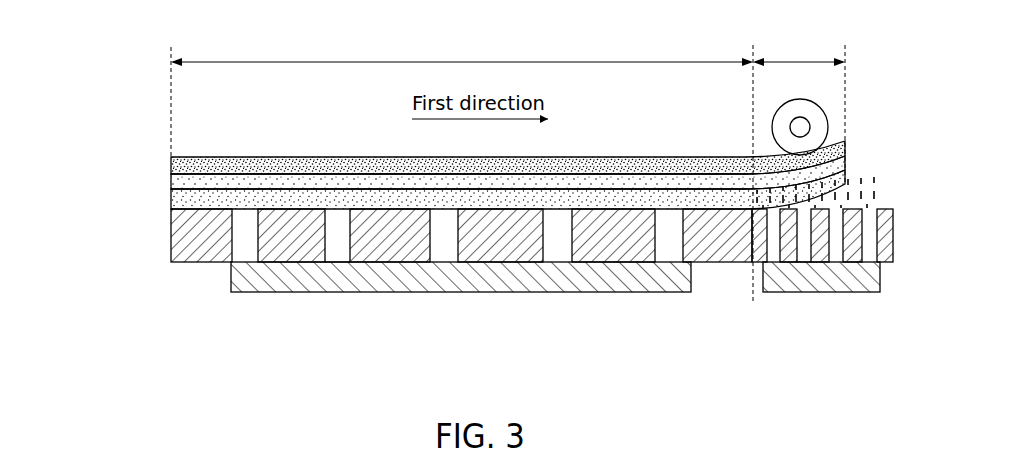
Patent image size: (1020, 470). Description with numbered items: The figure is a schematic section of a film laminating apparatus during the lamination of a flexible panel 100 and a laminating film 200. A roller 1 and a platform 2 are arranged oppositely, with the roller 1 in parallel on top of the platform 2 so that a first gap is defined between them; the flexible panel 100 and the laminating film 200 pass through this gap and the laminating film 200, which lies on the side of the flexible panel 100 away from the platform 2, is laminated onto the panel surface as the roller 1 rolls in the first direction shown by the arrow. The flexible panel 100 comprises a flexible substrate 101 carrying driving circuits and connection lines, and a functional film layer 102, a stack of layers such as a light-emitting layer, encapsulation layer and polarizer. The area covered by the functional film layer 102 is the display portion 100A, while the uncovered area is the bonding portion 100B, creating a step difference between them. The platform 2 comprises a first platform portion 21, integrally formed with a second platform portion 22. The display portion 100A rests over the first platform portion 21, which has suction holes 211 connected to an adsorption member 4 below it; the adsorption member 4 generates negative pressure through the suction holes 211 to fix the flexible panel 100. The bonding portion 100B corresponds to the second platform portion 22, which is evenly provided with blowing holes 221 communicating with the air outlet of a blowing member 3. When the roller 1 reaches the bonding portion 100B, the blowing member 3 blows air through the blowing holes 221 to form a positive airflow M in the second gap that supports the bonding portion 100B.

The flexible panel 100 is at (435, 184).
The display portion 100A is at (462, 50).
The bonding portion 100B is at (799, 49).
The flexible substrate 101 is at (172, 182).
The functional film layer 102 is at (172, 199).
The laminating film 200 is at (172, 163).
The roller 1 is at (806, 100).
The platform 2 is at (532, 300).
The first platform portion 21 is at (461, 283).
The suction holes 211 is at (341, 247).
The second platform portion 22 is at (817, 280).
The blowing holes 221 is at (809, 247).
The blowing member 3 is at (870, 292).
The adsorption member 4 is at (463, 293).
The positive airflow M is at (878, 187).